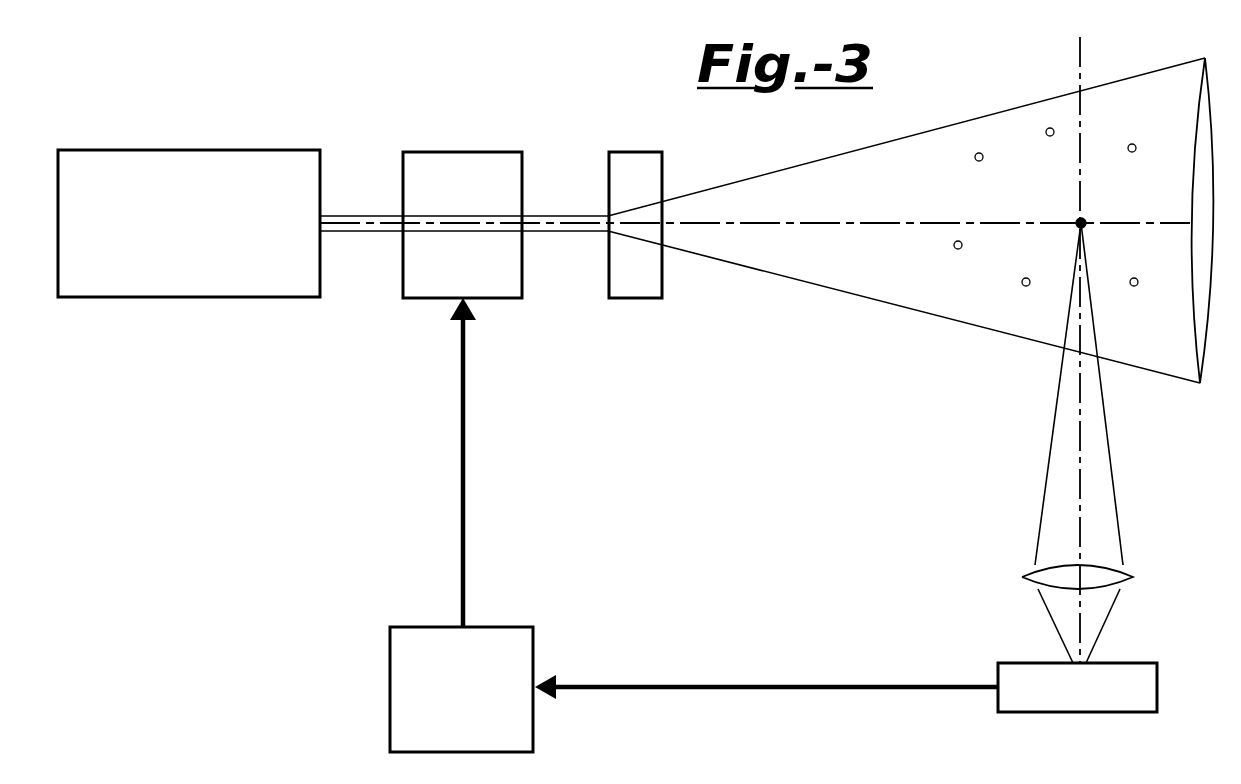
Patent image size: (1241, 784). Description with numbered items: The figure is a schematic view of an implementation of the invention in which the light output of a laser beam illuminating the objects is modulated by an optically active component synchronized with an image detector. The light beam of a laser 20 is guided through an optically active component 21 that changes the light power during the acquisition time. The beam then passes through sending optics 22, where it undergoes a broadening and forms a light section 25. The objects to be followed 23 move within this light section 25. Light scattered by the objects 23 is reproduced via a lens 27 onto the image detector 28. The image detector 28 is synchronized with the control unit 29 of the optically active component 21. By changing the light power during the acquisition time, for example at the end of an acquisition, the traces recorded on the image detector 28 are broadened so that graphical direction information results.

The laser 20 is at (240, 150).
The optically active component 21 is at (443, 152).
The sending optics 22 is at (632, 152).
The objects to be followed 23 is at (1084, 220).
The light section 25 is at (1007, 110).
The lens 27 is at (1133, 574).
The image detector 28 is at (1130, 663).
The control unit 29 is at (412, 627).